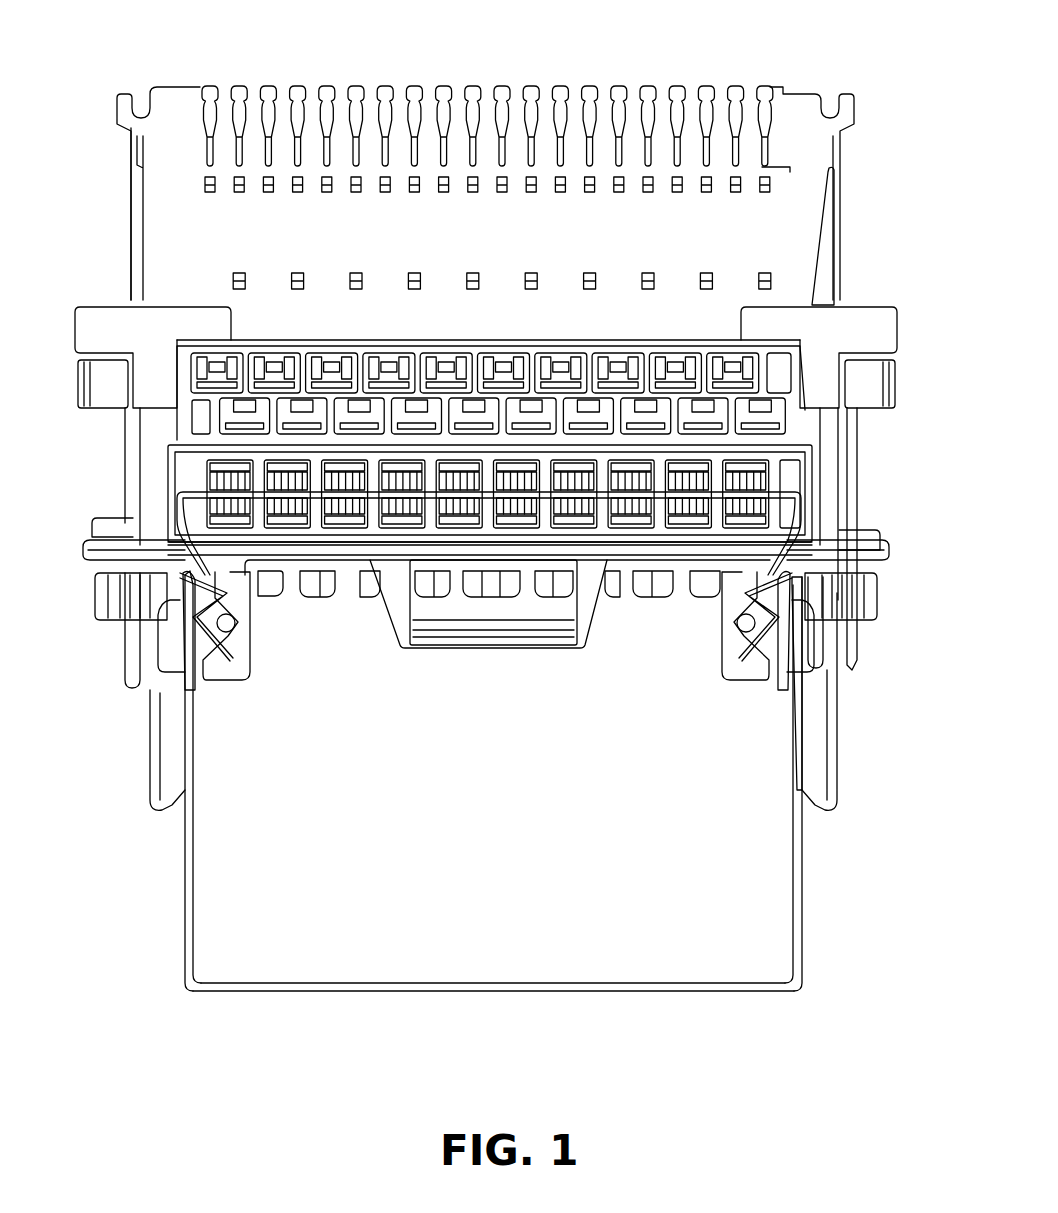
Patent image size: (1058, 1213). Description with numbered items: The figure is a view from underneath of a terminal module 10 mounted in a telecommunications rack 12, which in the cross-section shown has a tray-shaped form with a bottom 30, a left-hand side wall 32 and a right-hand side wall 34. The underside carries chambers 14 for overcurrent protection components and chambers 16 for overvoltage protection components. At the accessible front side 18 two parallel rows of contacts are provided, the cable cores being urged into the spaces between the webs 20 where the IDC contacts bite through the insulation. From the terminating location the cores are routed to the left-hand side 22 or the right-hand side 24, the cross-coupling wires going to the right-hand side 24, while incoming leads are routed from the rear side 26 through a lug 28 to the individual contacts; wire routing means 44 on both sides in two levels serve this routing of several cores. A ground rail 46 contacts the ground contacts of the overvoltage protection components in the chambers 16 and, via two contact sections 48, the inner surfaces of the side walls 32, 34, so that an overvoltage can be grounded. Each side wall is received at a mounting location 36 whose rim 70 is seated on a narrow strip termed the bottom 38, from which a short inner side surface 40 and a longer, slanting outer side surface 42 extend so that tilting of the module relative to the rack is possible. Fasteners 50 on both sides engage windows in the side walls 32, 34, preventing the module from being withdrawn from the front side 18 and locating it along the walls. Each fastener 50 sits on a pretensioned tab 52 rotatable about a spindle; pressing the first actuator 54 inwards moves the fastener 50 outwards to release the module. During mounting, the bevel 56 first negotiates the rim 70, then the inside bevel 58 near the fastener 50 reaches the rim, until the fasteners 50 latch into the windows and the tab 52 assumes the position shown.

The terminal module 10 is at (112, 150).
The telecommunications rack 12 is at (175, 958).
The chambers 14 is at (228, 415).
The chambers 16 is at (215, 482).
The front side 18 is at (500, 78).
The webs 20 is at (340, 86).
The left-hand side 22 is at (118, 212).
The right-hand side 24 is at (855, 240).
The rear side 26 is at (500, 700).
The lug 28 is at (548, 630).
The bottom 30 is at (497, 994).
The left-hand side wall 32 is at (185, 897).
The right-hand side wall 34 is at (800, 885).
The mounting location 36 is at (165, 588).
The bottom 38 is at (175, 560).
The side surface 40 is at (225, 583).
The outer side surface 42 is at (185, 597).
The wire routing means 44 is at (100, 333).
The ground rail 46 is at (800, 495).
The contact sections 48 is at (230, 690).
The fasteners 50 is at (175, 665).
The tab 52 is at (845, 435).
The first actuator 54 is at (834, 185).
The bevel 56 is at (168, 815).
The inside bevel 58 is at (790, 675).
The rim 70 is at (190, 612).